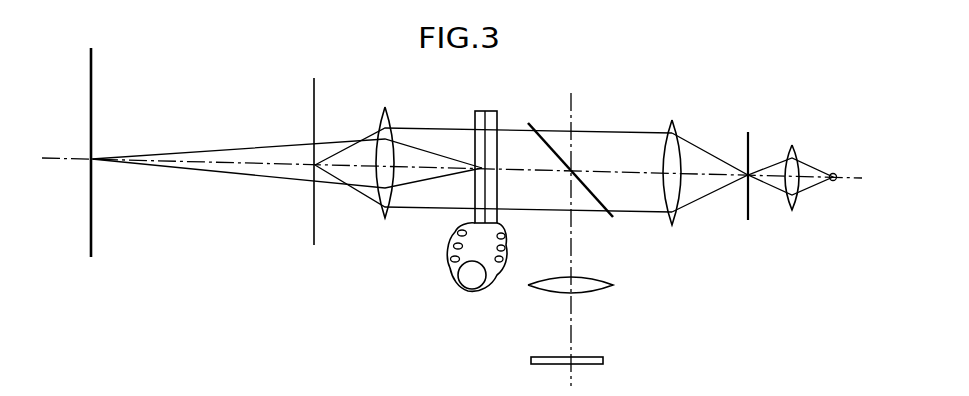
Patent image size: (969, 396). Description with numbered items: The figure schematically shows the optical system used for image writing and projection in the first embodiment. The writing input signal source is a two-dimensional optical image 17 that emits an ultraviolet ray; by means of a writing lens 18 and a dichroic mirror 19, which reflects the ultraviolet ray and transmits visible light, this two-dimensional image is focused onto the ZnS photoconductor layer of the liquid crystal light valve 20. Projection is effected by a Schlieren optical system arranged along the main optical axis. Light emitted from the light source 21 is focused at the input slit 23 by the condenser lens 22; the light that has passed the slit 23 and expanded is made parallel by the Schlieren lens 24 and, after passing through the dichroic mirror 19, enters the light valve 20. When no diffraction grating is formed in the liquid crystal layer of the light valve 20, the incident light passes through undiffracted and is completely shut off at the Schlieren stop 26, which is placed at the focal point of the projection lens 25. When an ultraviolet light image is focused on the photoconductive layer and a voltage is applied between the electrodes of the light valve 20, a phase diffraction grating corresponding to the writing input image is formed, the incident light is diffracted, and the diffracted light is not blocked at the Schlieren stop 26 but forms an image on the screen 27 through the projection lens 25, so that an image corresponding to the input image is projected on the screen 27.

The two-dimensional optical image 17 is at (606, 361).
The writing lens 18 is at (613, 285).
The dichroic mirror 19 is at (530, 122).
The liquid crystal light valve 20 is at (490, 111).
The light source 21 is at (836, 176).
The condenser lens 22 is at (793, 146).
The input slit 23 is at (748, 132).
The Schlieren lens 24 is at (672, 120).
The projection lens 25 is at (386, 107).
The Schlieren stop 26 is at (315, 78).
The screen 27 is at (90, 158).